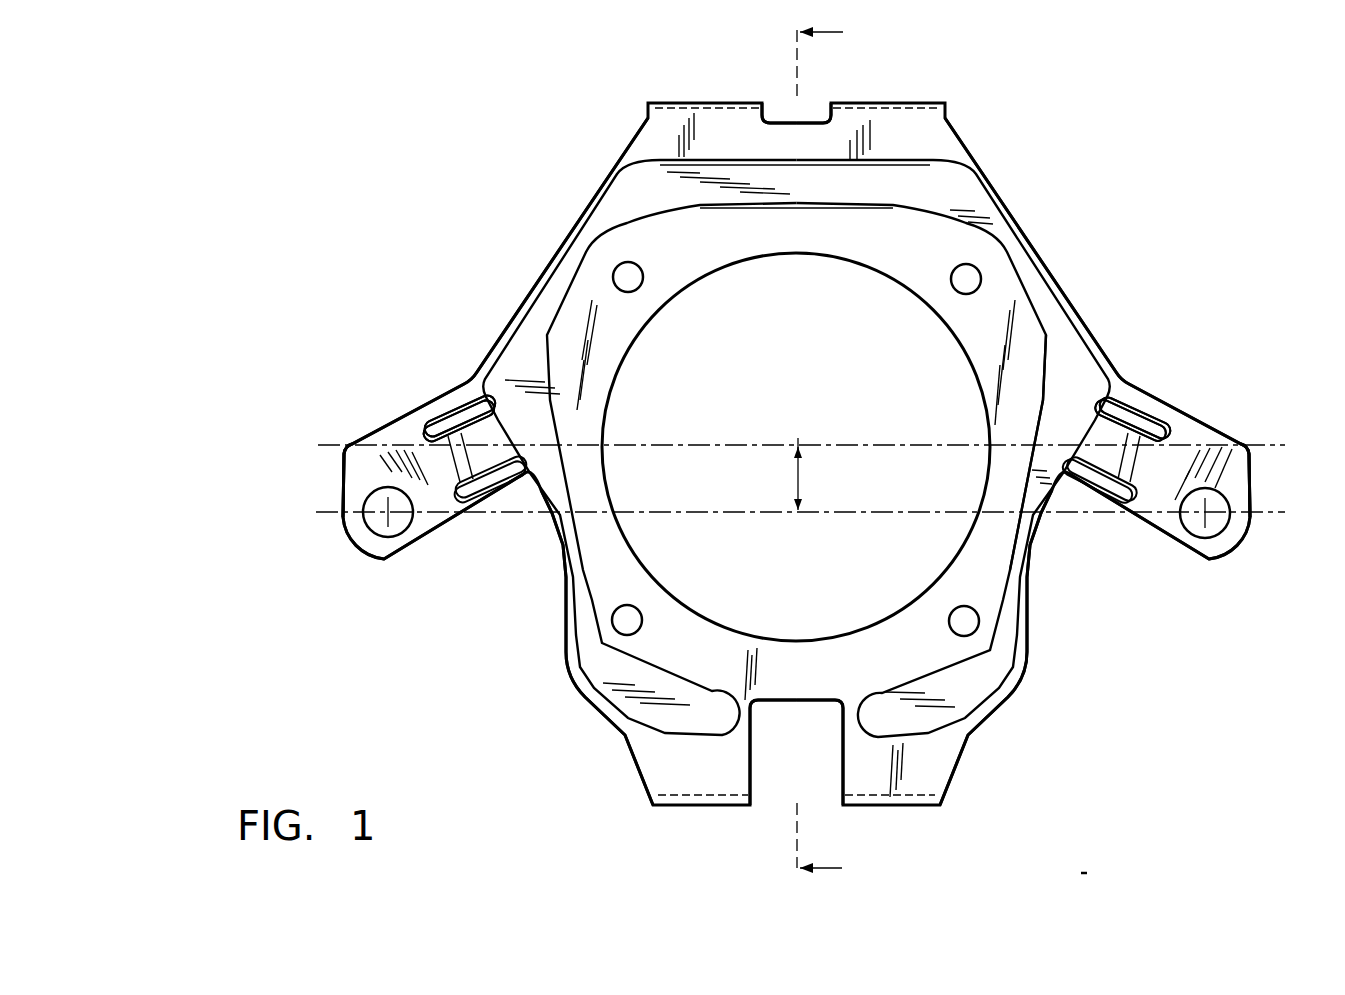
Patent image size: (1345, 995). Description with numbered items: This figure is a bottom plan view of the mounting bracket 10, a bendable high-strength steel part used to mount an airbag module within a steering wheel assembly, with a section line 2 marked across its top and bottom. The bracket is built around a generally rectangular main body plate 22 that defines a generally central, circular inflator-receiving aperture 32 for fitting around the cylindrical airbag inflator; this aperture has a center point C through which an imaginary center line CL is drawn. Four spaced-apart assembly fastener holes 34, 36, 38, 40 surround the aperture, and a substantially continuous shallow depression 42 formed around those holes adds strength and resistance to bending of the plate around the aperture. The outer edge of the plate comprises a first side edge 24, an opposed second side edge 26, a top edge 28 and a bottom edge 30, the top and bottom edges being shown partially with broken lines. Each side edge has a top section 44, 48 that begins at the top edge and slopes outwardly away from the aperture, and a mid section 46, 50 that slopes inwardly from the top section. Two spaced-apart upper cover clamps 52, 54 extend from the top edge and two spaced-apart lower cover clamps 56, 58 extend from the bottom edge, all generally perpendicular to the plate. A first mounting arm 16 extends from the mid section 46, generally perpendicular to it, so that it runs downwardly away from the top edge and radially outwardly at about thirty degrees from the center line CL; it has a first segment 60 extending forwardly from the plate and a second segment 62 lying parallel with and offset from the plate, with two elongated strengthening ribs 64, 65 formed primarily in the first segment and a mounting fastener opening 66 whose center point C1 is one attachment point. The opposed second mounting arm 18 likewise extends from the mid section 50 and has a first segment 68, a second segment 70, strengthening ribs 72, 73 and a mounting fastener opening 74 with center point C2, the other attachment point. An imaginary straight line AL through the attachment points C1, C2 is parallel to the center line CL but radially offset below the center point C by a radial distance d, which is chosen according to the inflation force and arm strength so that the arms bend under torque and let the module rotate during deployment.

The mounting bracket 10 is at (1014, 85).
The first mounting arm 16 is at (383, 412).
The second mounting arm 18 is at (1208, 414).
The main body plate 22 is at (1026, 219).
The first side edge 24 is at (567, 665).
The second side edge 26 is at (1029, 665).
The top edge 28 is at (811, 121).
The bottom edge 30 is at (793, 700).
The inflator-receiving aperture 32 is at (946, 325).
The assembly fastener hole 34 is at (641, 269).
The assembly fastener hole 36 is at (953, 270).
The assembly fastener hole 38 is at (953, 632).
The assembly fastener hole 40 is at (641, 623).
The shallow depression 42 is at (1060, 320).
The top section of first side edge 44 is at (552, 262).
The mid section of first side edge 46 is at (553, 533).
The top section of second side edge 48 is at (990, 178).
The mid section of second side edge 50 is at (1038, 547).
The upper cover clamp 52 is at (650, 106).
The upper cover clamp 54 is at (950, 108).
The lower cover clamp 56 is at (648, 796).
The lower cover clamp 58 is at (940, 796).
The first segment of first mounting arm 60 is at (473, 393).
The second segment of first mounting arm 62 is at (362, 436).
The strengthening rib 64 is at (452, 407).
The strengthening rib 65 is at (457, 507).
The mounting fastener opening 66 is at (362, 529).
The first segment of second mounting arm 68 is at (1146, 405).
The second segment of second mounting arm 70 is at (1211, 436).
The strengthening rib 72 is at (1126, 398).
The strengthening rib 73 is at (1096, 494).
The mounting fastener opening 74 is at (1190, 538).
The center point C is at (800, 446).
The attachment point C1 is at (390, 515).
The attachment point C2 is at (1210, 518).
The imaginary center line CL is at (1272, 447).
The imaginary straight line AL is at (1273, 512).
The radial distance d is at (796, 482).
The section line 2- 2 is at (803, 451).